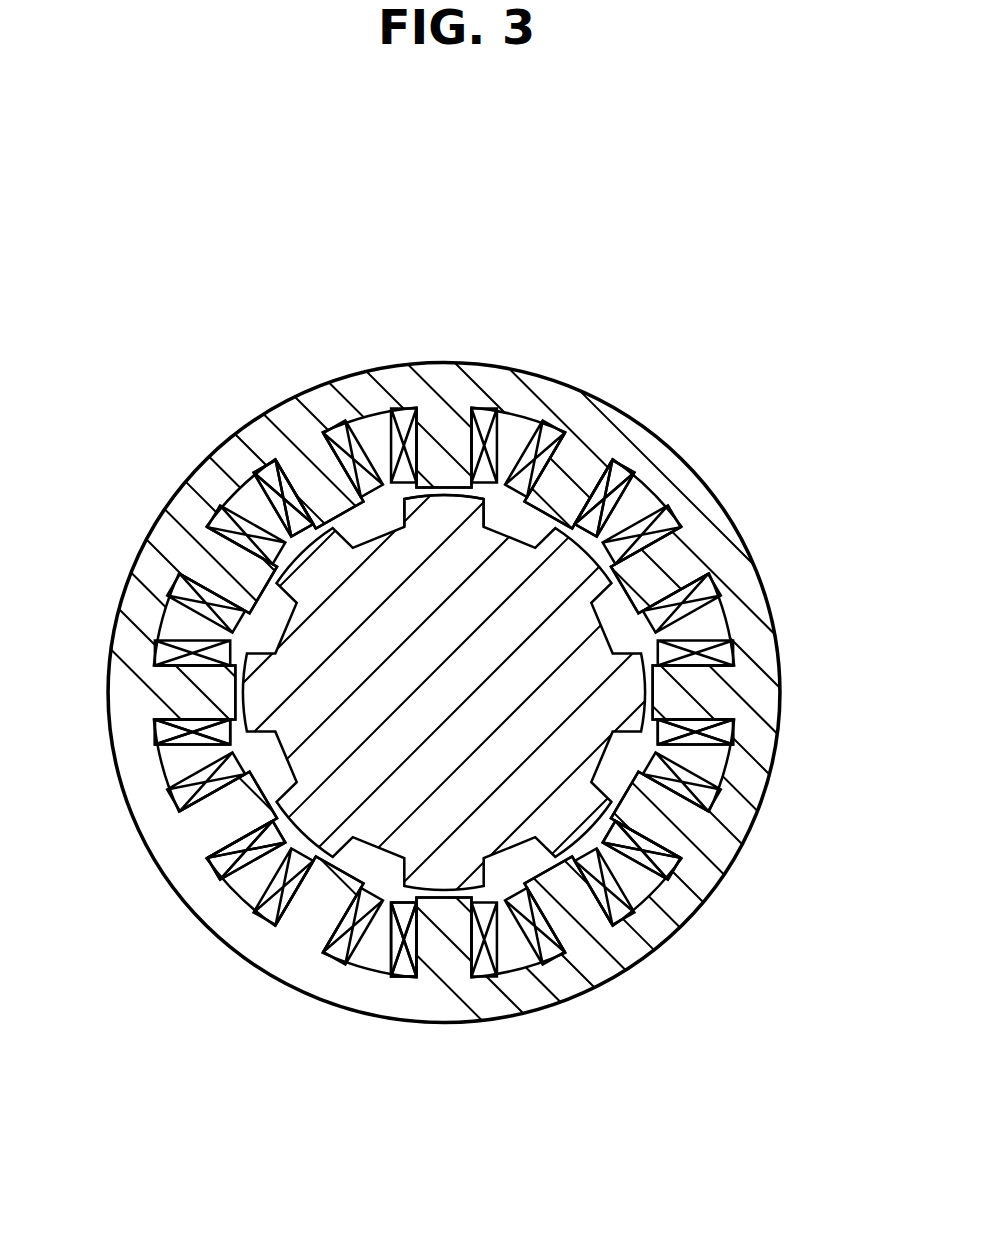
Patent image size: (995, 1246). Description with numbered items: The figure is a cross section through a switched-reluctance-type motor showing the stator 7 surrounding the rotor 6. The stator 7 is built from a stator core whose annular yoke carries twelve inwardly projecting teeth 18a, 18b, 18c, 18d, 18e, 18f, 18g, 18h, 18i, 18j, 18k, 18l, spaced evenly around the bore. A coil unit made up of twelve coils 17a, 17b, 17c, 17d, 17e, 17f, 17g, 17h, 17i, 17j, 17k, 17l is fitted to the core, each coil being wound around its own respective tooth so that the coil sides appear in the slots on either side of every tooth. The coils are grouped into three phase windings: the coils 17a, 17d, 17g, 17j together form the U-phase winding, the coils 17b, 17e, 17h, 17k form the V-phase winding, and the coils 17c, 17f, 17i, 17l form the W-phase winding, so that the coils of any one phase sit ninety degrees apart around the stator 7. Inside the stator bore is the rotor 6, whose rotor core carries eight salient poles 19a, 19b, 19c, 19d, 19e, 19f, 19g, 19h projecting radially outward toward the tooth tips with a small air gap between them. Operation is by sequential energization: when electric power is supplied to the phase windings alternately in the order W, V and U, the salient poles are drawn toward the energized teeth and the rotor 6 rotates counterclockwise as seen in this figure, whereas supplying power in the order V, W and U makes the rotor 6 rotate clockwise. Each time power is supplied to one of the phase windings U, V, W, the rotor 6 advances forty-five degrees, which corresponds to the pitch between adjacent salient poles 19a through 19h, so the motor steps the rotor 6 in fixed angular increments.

The rotor 6 is at (607, 635).
The stator 7 is at (540, 365).
The coil 17a is at (403, 423).
The coil 17b is at (250, 440).
The coil 17c is at (182, 597).
The coil 17d is at (167, 735).
The coil 17e is at (223, 858).
The coil 17f is at (310, 916).
The coil 17g is at (483, 963).
The coil 17h is at (618, 908).
The coil 17i is at (702, 787).
The coil 17j is at (687, 655).
The coil 17k is at (662, 510).
The coil 17l is at (543, 437).
The tooth 18a is at (458, 445).
The tooth 18b is at (318, 452).
The tooth 18c is at (208, 568).
The tooth 18d is at (193, 692).
The tooth 18e is at (223, 813).
The tooth 18f is at (265, 972).
The tooth 18g is at (443, 957).
The tooth 18h is at (573, 927).
The tooth 18i is at (670, 822).
The tooth 18j is at (690, 695).
The tooth 18k is at (672, 543).
The tooth 18l is at (573, 477).
The salient pole 19a is at (448, 505).
The salient pole 19b is at (270, 477).
The salient pole 19c is at (152, 655).
The salient pole 19d is at (225, 922).
The salient pole 19e is at (385, 903).
The salient pole 19f is at (680, 915).
The salient pole 19g is at (700, 746).
The salient pole 19h is at (632, 477).